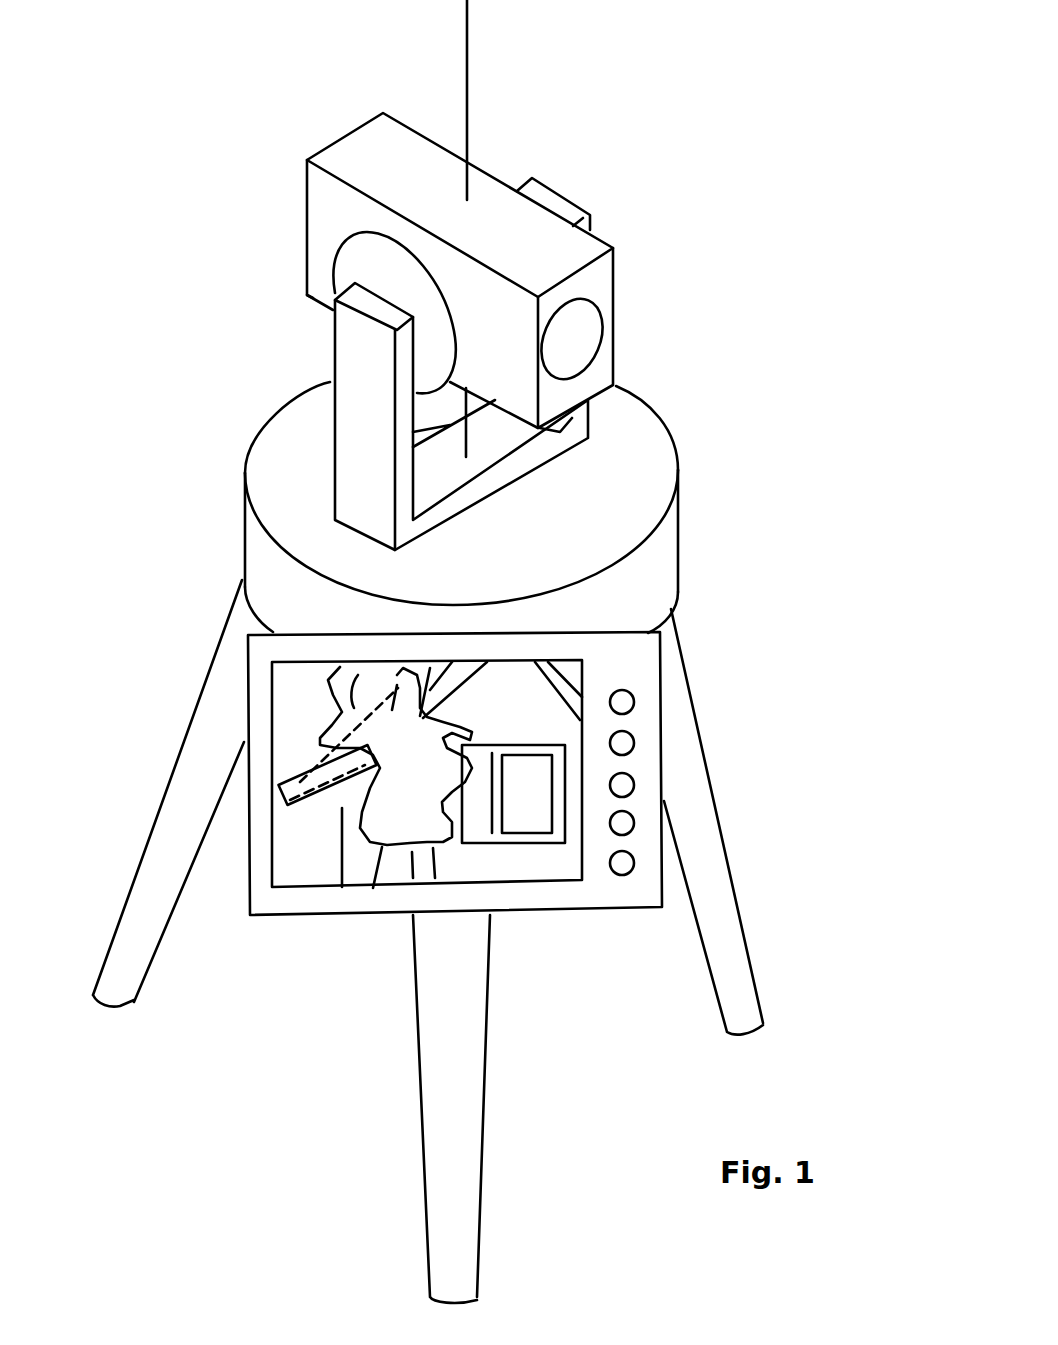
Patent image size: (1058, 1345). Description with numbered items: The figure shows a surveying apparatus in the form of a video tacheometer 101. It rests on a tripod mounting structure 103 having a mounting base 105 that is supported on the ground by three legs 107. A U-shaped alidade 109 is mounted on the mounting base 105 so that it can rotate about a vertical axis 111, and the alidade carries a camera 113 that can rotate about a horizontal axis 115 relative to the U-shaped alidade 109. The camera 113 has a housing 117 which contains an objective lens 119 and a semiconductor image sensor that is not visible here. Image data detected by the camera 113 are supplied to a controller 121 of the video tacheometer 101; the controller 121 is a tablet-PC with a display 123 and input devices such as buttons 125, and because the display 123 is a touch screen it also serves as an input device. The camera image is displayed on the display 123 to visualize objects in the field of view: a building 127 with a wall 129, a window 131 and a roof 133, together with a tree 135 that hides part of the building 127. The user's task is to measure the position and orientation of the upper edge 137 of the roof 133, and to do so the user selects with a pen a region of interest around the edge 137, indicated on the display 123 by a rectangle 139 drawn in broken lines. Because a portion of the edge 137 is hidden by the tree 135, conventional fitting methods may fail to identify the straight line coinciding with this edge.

The video tacheometer 101 is at (684, 84).
The tripod mounting structure 103 is at (732, 499).
The mounting base 105 is at (672, 443).
The legs 107 is at (168, 928).
The U-shaped alidade 109 is at (391, 391).
The vertical axis 111 is at (468, 35).
The camera 113 is at (467, 270).
The horizontal axis 115 is at (352, 334).
The housing 117 is at (307, 200).
The objective lens 119 is at (590, 305).
The controller 121 is at (299, 915).
The display 123 is at (552, 883).
The buttons 125 is at (634, 706).
The building 127 is at (329, 866).
The wall 129 is at (537, 722).
The window 131 is at (527, 848).
The roof 133 is at (303, 820).
The tree 135 is at (372, 887).
The upper edge 137 is at (430, 668).
The rectangle 139 is at (397, 685).